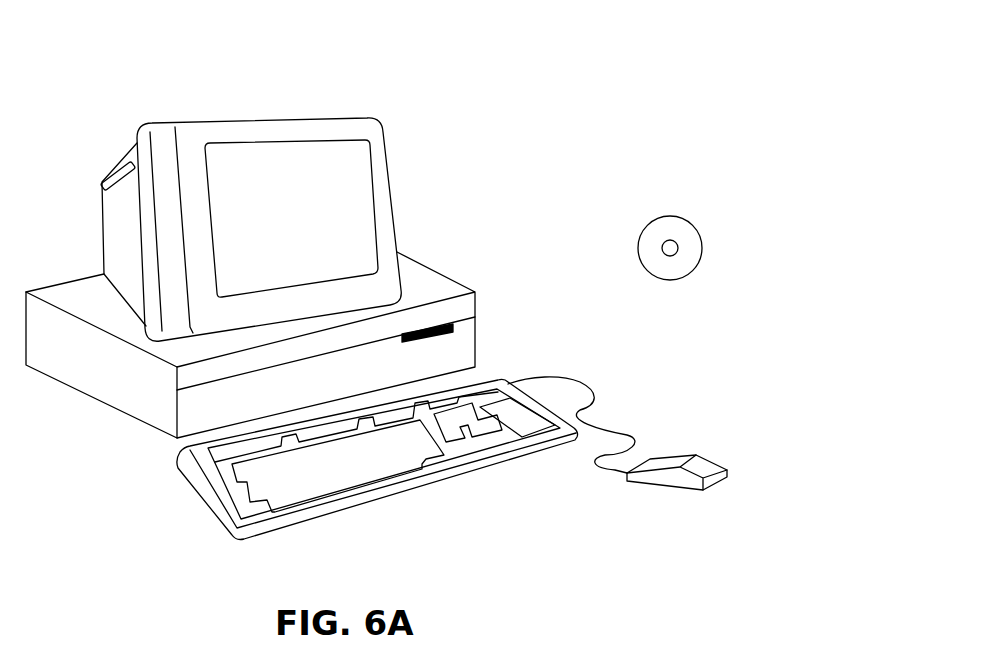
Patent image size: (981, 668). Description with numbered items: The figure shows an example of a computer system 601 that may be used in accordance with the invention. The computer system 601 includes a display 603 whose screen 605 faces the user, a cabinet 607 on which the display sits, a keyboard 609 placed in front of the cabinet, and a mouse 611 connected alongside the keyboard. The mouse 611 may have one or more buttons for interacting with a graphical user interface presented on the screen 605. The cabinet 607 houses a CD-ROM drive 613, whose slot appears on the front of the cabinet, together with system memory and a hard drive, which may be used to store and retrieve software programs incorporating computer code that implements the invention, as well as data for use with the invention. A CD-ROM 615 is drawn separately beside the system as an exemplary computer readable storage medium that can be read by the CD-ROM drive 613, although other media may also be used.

The computer system 601 is at (593, 96).
The display 603 is at (395, 228).
The screen 605 is at (355, 180).
The cabinet 607 is at (121, 422).
The keyboard 609 is at (381, 498).
The mouse 611 is at (718, 460).
The CD-ROM drive 613 is at (452, 312).
The CD-ROM 615 is at (688, 218).